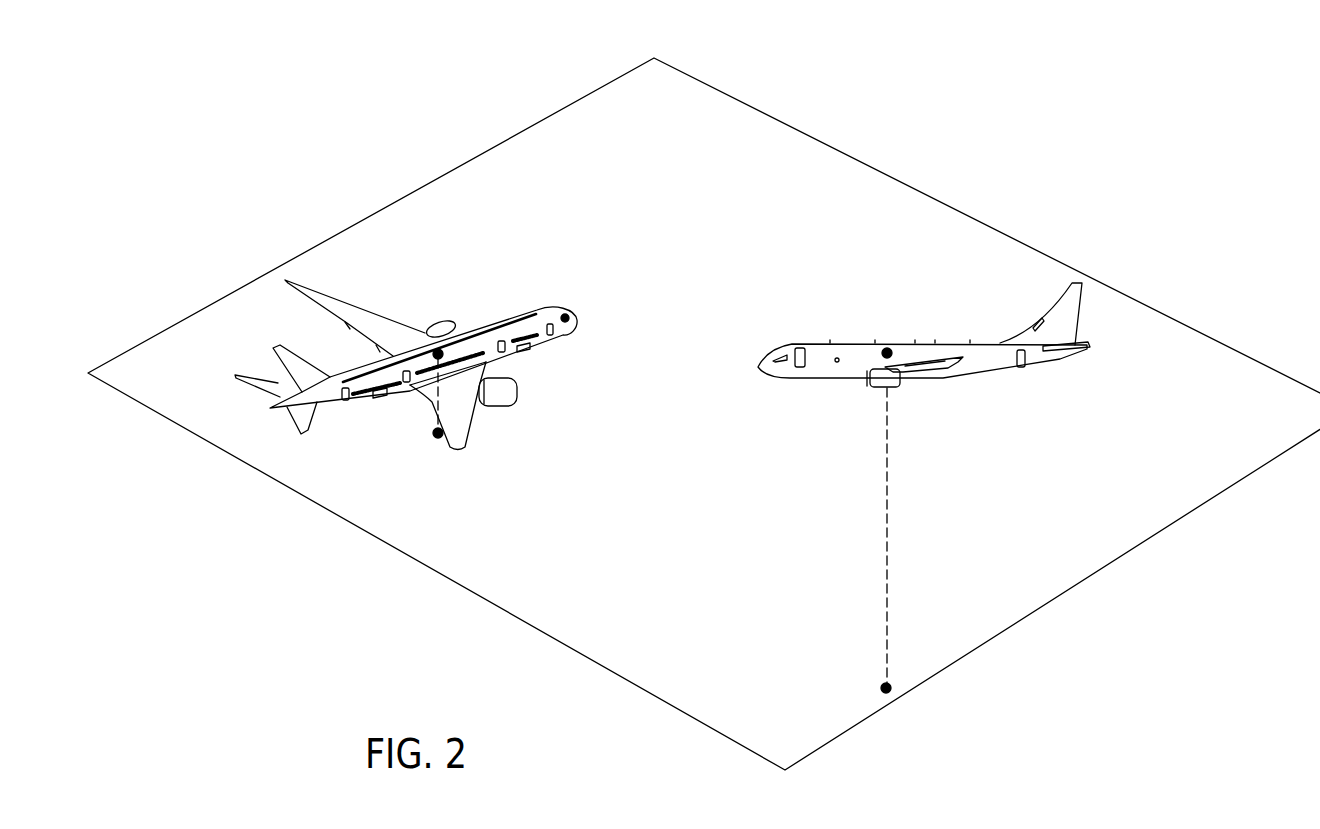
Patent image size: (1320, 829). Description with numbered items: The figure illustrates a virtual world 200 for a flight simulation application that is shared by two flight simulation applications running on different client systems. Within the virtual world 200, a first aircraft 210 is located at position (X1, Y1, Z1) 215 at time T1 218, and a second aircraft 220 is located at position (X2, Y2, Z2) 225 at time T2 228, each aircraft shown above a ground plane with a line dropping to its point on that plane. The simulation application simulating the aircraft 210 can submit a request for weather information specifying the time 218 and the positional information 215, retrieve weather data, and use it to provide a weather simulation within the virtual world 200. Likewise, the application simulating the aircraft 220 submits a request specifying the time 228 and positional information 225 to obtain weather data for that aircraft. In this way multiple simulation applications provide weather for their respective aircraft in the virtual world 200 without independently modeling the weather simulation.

The virtual world 200 is at (1185, 78).
The aircraft 210 is at (380, 327).
The position (X1, Y1, Z1) 215 is at (443, 352).
The time T1 218 is at (613, 347).
The aircraft 220 is at (977, 357).
The position (X2, Y2, Z2) 225 is at (887, 347).
The time T2 228 is at (1012, 483).